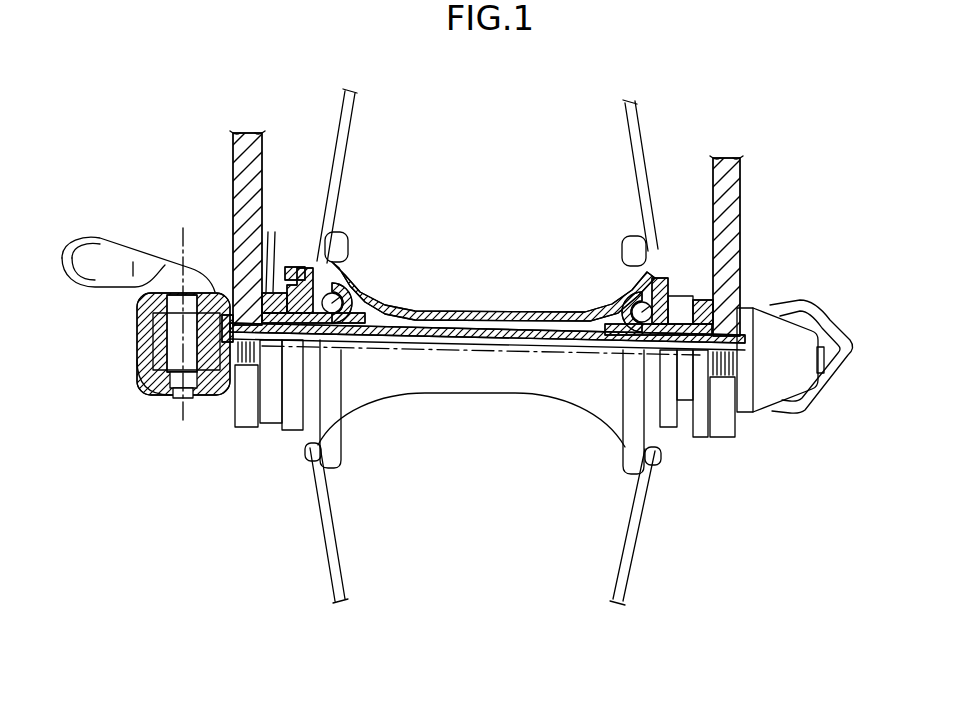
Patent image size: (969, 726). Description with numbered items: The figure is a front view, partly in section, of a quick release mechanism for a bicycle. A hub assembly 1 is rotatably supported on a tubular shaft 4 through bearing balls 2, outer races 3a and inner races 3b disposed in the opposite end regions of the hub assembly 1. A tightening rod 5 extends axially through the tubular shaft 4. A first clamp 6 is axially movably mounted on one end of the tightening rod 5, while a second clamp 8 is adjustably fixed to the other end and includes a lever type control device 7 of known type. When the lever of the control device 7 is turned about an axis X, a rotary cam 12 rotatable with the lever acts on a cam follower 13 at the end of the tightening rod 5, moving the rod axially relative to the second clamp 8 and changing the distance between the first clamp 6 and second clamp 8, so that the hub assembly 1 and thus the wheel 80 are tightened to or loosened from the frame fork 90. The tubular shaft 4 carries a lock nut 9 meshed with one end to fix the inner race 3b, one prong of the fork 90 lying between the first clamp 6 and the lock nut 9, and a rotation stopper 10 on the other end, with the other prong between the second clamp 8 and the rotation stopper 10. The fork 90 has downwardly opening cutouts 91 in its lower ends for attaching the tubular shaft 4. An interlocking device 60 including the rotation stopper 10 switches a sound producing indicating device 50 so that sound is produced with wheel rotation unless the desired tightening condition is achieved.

The hub assembly 1 is at (510, 400).
The bearing balls 2 is at (353, 290).
The outer races 3a is at (350, 330).
The inner races 3b is at (312, 327).
The tubular shaft 4 is at (446, 314).
The tightening rod 5 is at (490, 330).
The first clamp 6 is at (760, 392).
The lever type control device 7 is at (156, 252).
The second clamp 8 is at (210, 398).
The lock nut 9 is at (697, 413).
The rotation stopper 10 is at (268, 290).
The rotary cam 12 is at (137, 337).
The cam follower 13 is at (137, 362).
The indicating device 50 is at (301, 250).
The interlocking device 60 is at (273, 410).
The wheel 80 is at (335, 116).
The frame fork 90 is at (238, 165).
The cutouts 91 is at (243, 403).
The axis X is at (181, 216).